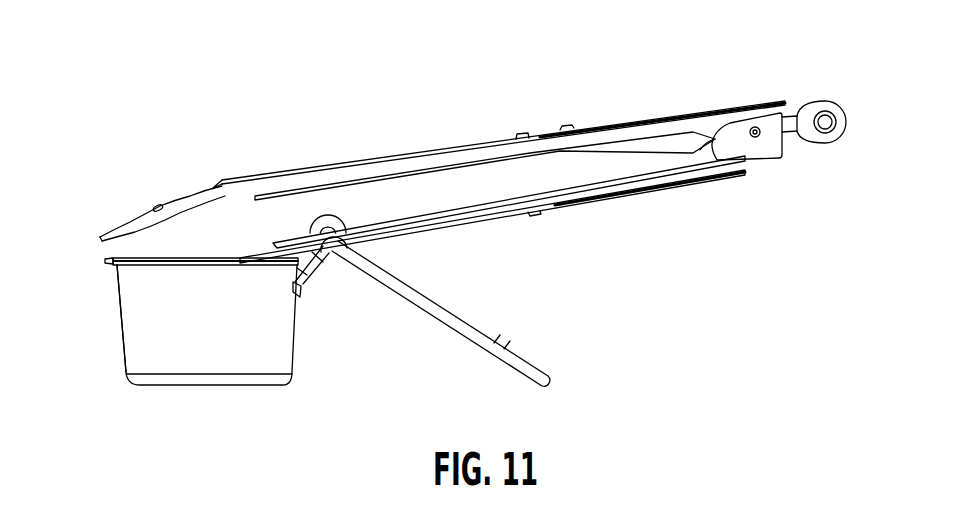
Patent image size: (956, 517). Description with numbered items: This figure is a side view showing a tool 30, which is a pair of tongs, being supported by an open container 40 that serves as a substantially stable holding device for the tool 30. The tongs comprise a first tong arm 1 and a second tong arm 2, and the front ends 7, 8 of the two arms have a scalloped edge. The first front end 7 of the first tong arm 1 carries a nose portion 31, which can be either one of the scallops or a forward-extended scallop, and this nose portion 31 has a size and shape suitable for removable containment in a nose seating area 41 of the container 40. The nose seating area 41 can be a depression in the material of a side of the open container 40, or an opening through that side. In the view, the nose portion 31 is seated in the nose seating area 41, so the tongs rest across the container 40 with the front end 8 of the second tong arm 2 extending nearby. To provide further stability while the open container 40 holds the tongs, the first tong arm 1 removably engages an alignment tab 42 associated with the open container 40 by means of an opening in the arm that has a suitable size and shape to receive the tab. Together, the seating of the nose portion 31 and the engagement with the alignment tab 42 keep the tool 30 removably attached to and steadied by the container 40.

The first tong arm 1 is at (499, 263).
The second tong arm 2 is at (430, 103).
The first front end 7 is at (200, 232).
The front end 8 is at (165, 168).
The tool 30 is at (539, 61).
The nose portion 31 is at (113, 261).
The open container 40 is at (176, 421).
The nose seating area 41 is at (97, 295).
The alignment tab 42 is at (328, 220).